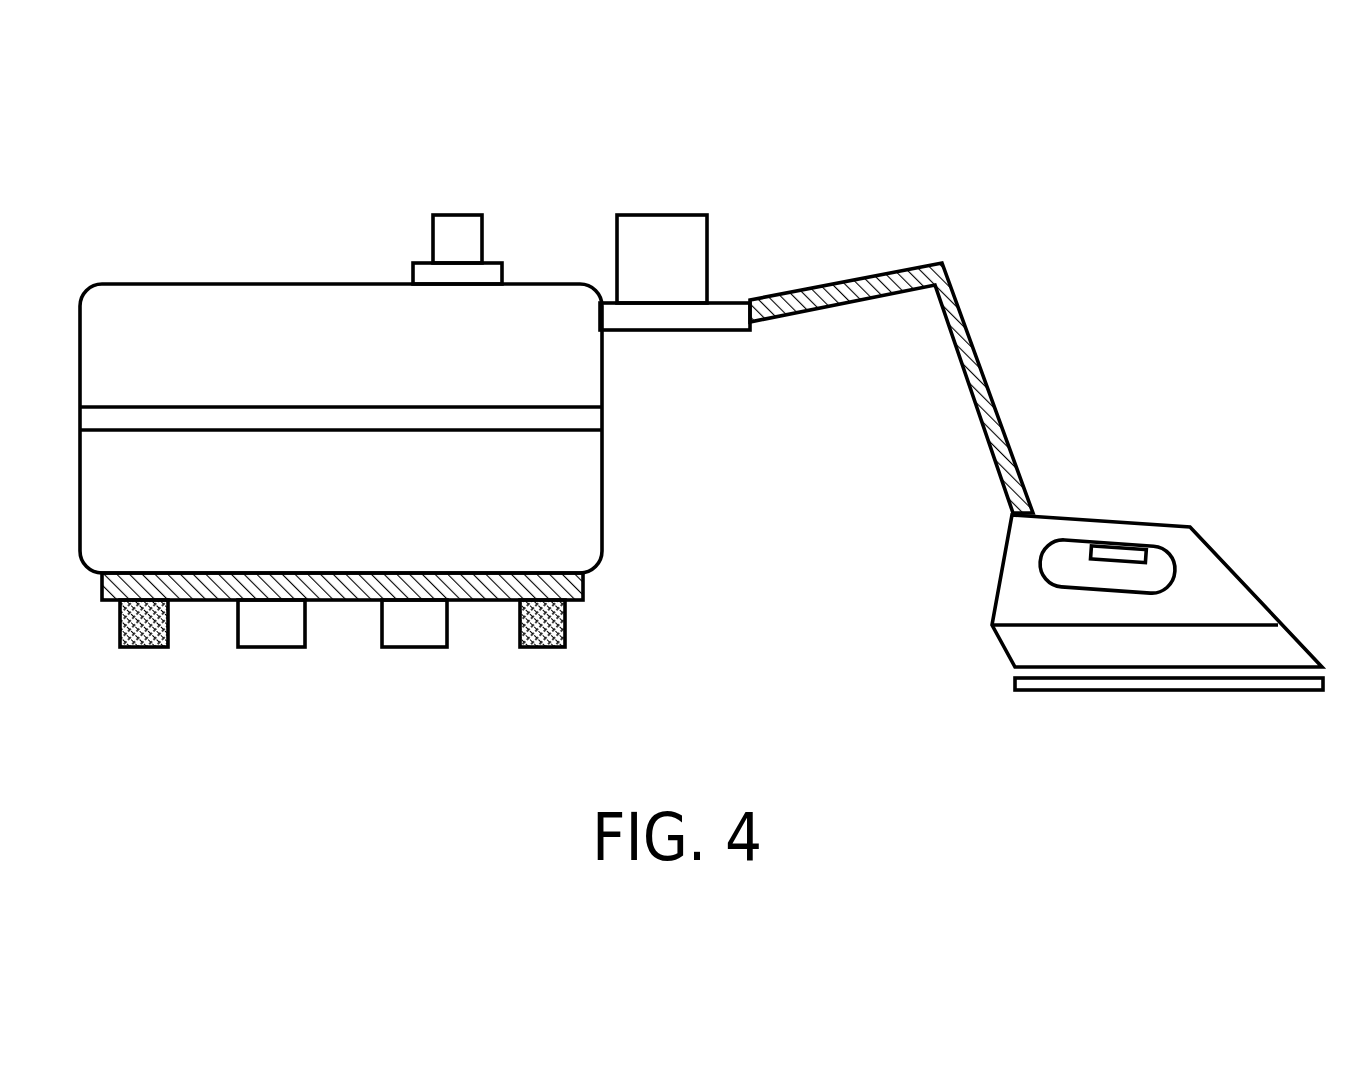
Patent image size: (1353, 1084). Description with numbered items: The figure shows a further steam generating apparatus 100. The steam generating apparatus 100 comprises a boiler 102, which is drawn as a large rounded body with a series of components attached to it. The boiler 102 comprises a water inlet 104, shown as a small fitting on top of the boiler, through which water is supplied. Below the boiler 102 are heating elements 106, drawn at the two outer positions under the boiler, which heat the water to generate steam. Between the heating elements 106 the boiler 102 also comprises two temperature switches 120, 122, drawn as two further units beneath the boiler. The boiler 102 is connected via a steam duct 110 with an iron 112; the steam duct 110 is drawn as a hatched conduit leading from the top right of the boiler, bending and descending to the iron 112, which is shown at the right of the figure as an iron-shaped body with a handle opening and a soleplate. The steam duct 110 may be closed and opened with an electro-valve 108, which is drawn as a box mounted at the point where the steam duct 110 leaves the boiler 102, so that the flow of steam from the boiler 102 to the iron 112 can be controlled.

The steam generating apparatus 100 is at (186, 166).
The boiler 102 is at (588, 490).
The water inlet 104 is at (456, 222).
The heating elements 106 is at (143, 644).
The electro-valve 108 is at (662, 225).
The steam duct 110 is at (820, 305).
The iron 112 is at (1223, 560).
The temperature switch 120 is at (272, 630).
The temperature switch 122 is at (415, 630).